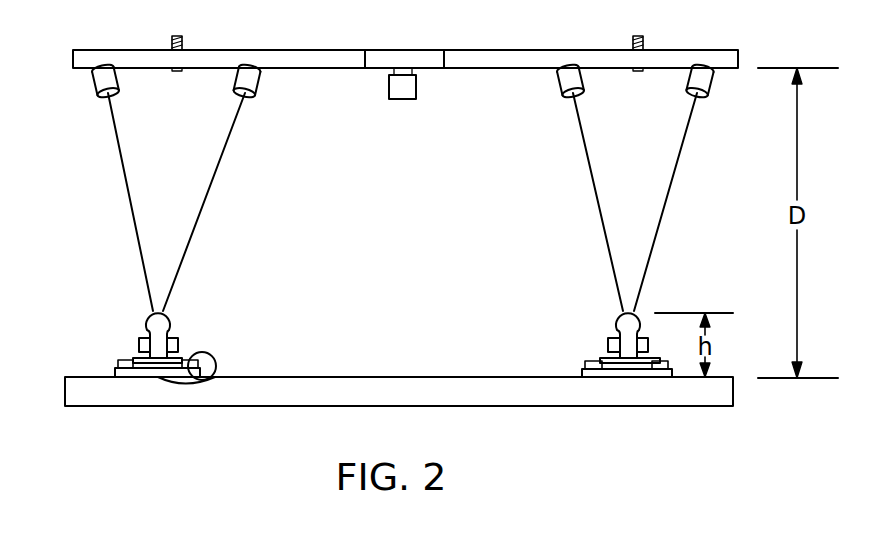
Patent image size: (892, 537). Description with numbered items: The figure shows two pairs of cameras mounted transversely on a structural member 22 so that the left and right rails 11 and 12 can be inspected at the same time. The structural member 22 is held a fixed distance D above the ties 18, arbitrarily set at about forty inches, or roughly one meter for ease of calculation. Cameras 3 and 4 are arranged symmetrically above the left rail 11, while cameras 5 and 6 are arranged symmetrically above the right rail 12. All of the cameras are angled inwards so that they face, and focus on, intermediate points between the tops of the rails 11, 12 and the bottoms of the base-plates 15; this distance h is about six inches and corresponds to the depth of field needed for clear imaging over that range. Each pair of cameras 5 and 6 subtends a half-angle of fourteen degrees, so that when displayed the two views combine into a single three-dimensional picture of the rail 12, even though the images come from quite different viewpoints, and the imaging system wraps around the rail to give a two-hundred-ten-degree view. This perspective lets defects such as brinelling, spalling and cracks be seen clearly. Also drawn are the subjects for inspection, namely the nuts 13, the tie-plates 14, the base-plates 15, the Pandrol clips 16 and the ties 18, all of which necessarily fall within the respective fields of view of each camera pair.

The structural member 22 is at (108, 50).
The camera 3 is at (93, 80).
The camera 4 is at (261, 79).
The camera 5 is at (558, 80).
The camera 6 is at (714, 80).
The left rail 11 is at (147, 320).
The right rail 12 is at (640, 316).
The nuts 13 is at (139, 345).
The tie-plates 14 is at (608, 345).
The base-plates 15 is at (582, 374).
The Pandrol clips 16 is at (216, 359).
The ties 18 is at (65, 390).